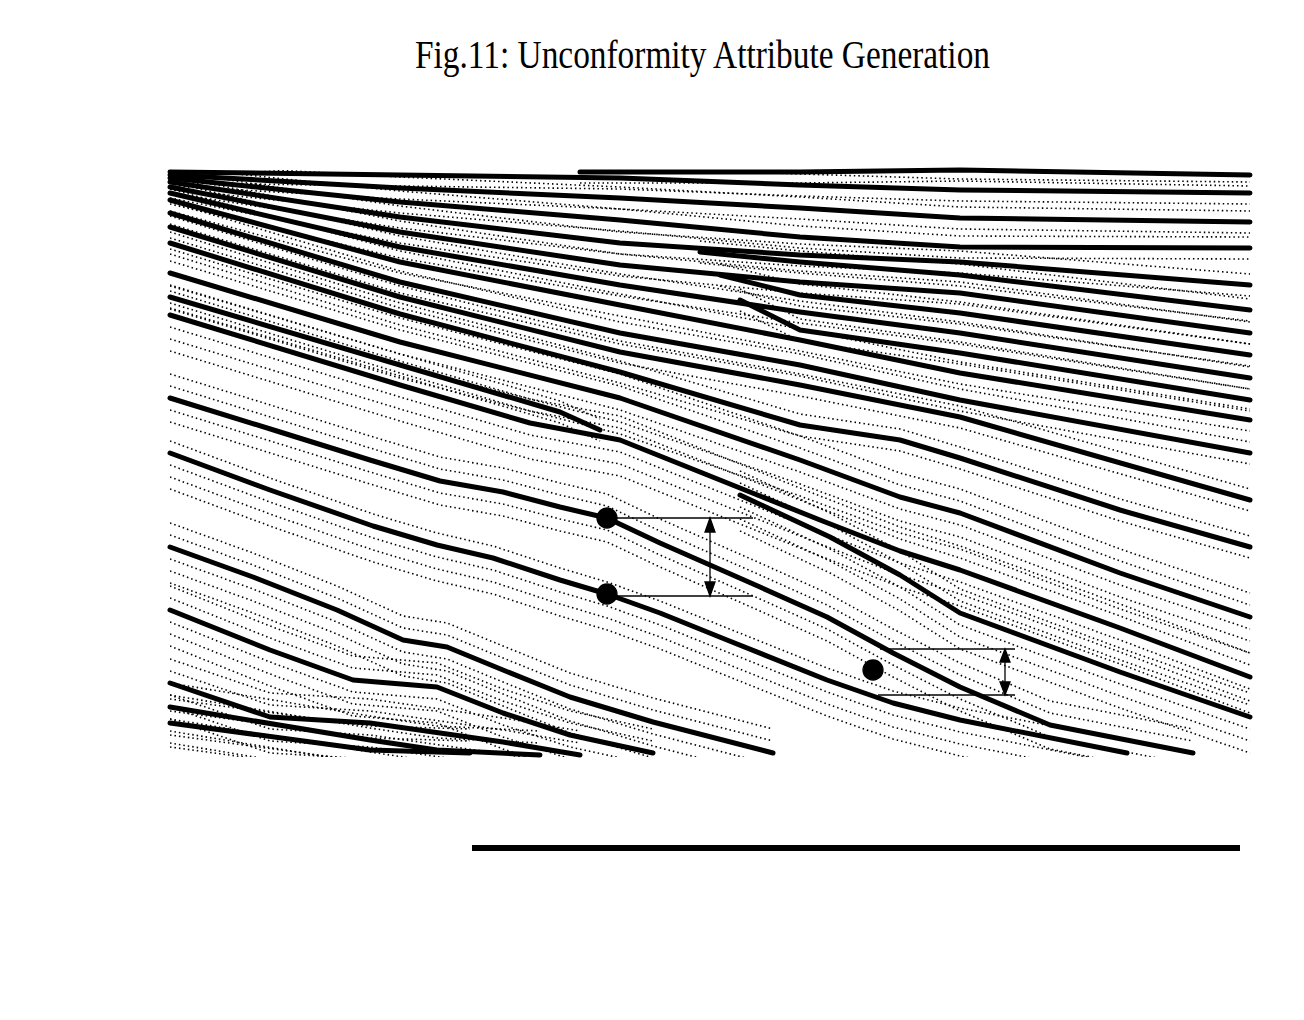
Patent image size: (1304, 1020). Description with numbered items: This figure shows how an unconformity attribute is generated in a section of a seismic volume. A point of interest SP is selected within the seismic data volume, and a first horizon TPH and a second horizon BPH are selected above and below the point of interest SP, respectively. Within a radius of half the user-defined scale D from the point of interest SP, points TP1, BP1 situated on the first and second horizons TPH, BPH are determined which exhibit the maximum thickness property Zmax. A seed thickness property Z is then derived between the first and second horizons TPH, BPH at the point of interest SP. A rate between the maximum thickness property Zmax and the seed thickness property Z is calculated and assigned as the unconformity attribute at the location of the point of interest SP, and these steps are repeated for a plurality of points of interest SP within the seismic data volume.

The first horizon TPH is at (380, 466).
The second horizon BPH is at (375, 530).
The point on the first horizon TP1 is at (596, 493).
The point on the second horizon BP1 is at (597, 625).
The point of interest SP is at (892, 634).
The maximum thickness property Zmax is at (715, 559).
The seed thickness property Z is at (967, 673).
The user-defined scale D is at (856, 883).